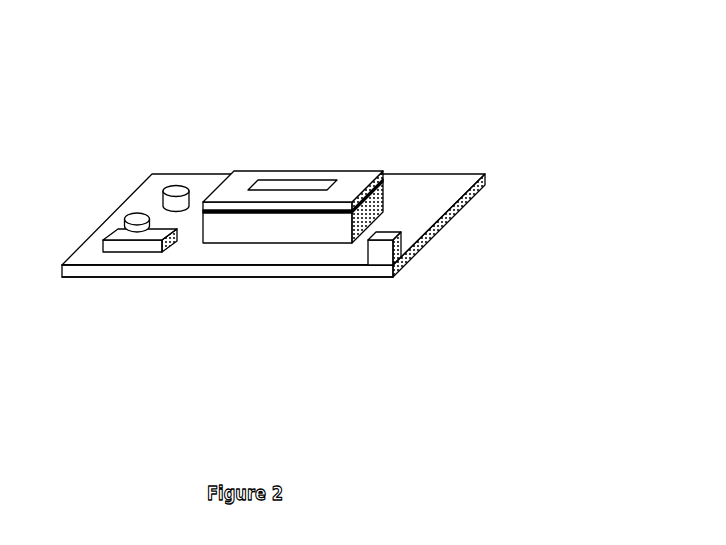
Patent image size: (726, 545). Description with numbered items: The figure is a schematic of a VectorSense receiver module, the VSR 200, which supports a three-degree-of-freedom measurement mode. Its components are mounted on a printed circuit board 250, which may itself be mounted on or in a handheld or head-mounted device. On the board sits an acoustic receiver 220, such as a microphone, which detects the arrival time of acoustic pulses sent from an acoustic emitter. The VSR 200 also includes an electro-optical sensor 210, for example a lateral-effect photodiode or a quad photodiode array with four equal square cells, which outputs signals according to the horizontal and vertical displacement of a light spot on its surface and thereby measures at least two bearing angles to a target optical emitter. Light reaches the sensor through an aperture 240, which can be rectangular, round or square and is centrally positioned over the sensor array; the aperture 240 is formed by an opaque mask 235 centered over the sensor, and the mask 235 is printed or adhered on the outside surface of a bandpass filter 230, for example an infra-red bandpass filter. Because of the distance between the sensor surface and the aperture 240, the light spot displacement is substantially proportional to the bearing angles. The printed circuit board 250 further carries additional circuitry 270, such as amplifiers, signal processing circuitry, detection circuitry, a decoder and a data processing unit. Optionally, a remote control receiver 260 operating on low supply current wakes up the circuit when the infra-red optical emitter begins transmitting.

The VectorSense receiver module 200 is at (272, 104).
The electro-optical sensor 210 is at (373, 215).
The acoustic receiver 220 is at (173, 187).
The bandpass filter 230 is at (383, 172).
The opaque mask 235 is at (248, 175).
The aperture 240 is at (303, 180).
The printed circuit board 250 is at (292, 264).
The remote control receiver 260 is at (132, 248).
The additional circuitry 270 is at (397, 255).